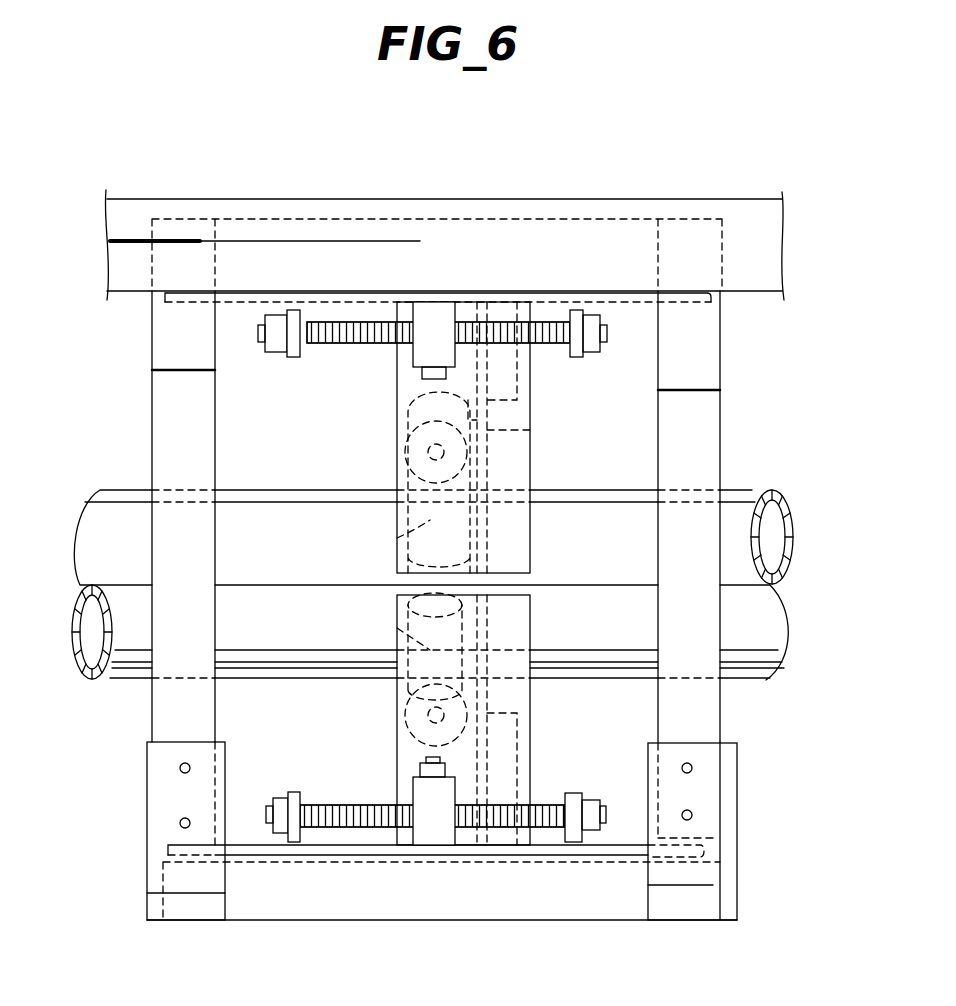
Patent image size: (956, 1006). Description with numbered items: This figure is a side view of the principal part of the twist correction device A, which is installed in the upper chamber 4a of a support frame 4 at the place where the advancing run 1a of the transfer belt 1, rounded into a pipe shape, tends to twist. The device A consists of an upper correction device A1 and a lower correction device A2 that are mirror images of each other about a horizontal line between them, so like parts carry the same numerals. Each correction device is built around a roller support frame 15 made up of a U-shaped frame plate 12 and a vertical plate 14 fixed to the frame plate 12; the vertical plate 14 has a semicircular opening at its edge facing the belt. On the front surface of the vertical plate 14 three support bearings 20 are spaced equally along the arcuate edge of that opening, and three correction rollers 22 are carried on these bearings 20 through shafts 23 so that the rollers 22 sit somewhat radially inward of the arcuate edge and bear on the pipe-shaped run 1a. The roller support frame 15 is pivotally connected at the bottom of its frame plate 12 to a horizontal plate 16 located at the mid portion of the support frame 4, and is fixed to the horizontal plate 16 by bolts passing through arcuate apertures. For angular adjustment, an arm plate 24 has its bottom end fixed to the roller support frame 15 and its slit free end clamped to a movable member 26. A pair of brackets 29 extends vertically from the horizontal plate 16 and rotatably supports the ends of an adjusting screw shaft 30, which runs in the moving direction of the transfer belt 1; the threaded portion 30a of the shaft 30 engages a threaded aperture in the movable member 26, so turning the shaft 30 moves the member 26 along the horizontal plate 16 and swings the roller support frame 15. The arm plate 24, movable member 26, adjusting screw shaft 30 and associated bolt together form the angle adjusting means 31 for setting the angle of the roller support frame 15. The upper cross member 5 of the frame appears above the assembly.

The transfer belt 1 is at (752, 488).
The advancing run 1a is at (430, 632).
The support frame 4 is at (637, 168).
The upper chamber 4a is at (630, 410).
The cross beam 5 is at (135, 198).
The U-shaped frame plate 12 is at (530, 534).
The vertical plate 14 is at (530, 422).
The roller support frame 15 is at (408, 408).
The horizontal plate 16 is at (215, 305).
The support bearings 20 is at (420, 422).
The correction rollers 22 is at (405, 540).
The shafts 23 is at (410, 464).
The arm plate 24 is at (422, 372).
The movable member 26 is at (446, 318).
The brackets 29 is at (297, 310).
The adjusting screw shaft 30 is at (355, 322).
The threaded portion 30a is at (435, 574).
The angle adjusting means 31 is at (252, 370).
The twist correction device A is at (638, 456).
The upper correction device A1 is at (547, 459).
The lower correction device A2 is at (549, 649).